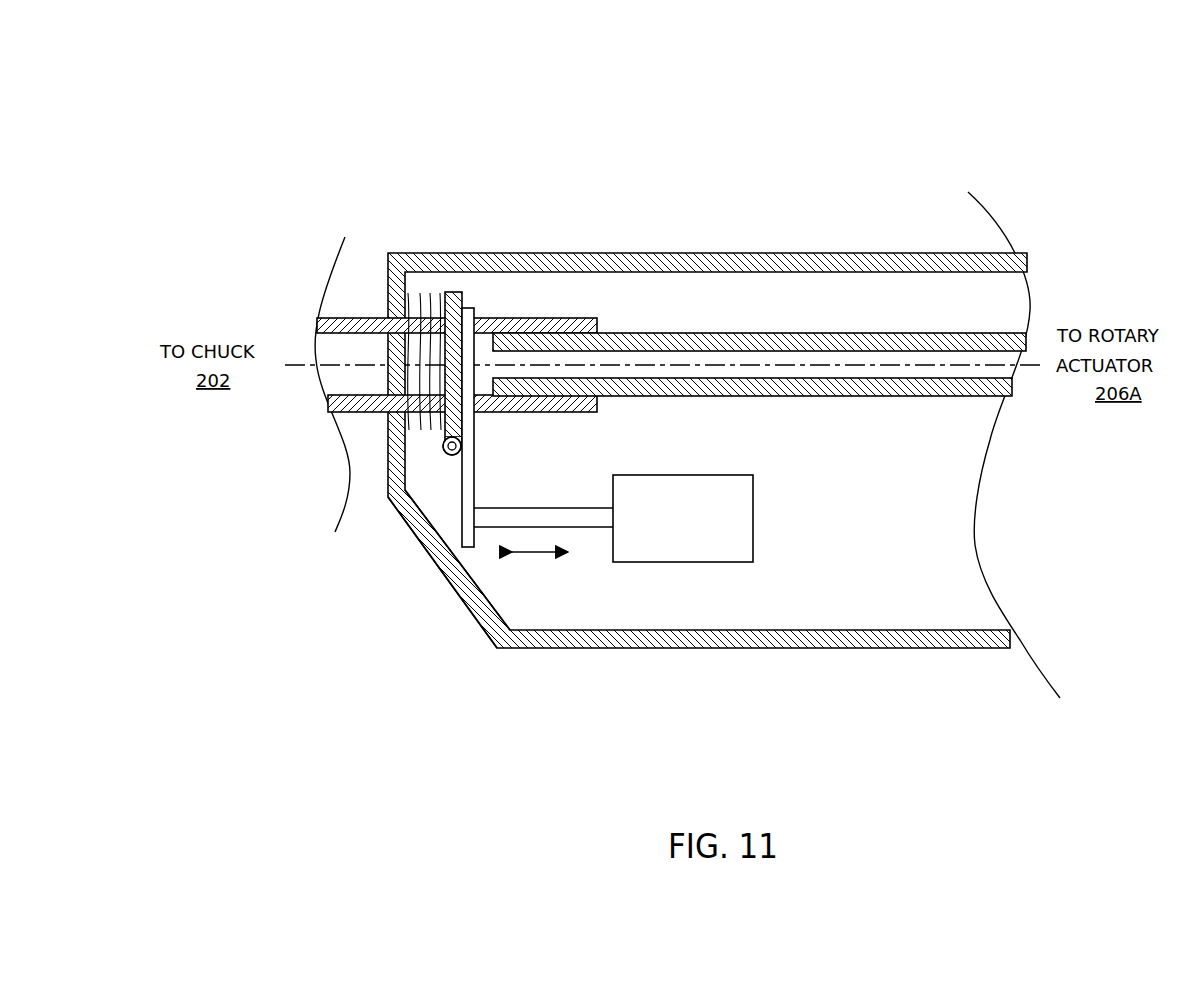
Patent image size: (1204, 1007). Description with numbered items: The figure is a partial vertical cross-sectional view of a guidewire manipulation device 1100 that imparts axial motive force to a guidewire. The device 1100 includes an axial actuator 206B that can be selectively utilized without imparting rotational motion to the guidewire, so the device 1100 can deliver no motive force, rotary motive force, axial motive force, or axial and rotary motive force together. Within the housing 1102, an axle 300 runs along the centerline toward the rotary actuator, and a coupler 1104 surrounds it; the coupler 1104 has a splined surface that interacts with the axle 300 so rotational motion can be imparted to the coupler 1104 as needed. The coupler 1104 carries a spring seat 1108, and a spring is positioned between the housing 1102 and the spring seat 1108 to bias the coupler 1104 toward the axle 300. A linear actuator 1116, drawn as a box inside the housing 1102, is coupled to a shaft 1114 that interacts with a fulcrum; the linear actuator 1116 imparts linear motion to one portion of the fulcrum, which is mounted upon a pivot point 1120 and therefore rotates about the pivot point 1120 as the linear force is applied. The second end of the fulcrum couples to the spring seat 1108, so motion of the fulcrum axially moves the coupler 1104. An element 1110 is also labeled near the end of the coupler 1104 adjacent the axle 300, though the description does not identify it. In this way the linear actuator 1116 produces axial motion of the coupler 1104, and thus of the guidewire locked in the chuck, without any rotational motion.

The guidewire manipulation device 1100 is at (802, 135).
The housing 1102 is at (681, 253).
The coupler 1104 is at (432, 272).
The spring seat 1108 is at (456, 292).
The plate 1110 is at (565, 412).
The shaft 1114 is at (588, 528).
The linear actuator 1116 is at (753, 508).
The pivot point 1120 is at (447, 456).
The axle 300 is at (845, 332).
The axial actuator 206B is at (449, 617).